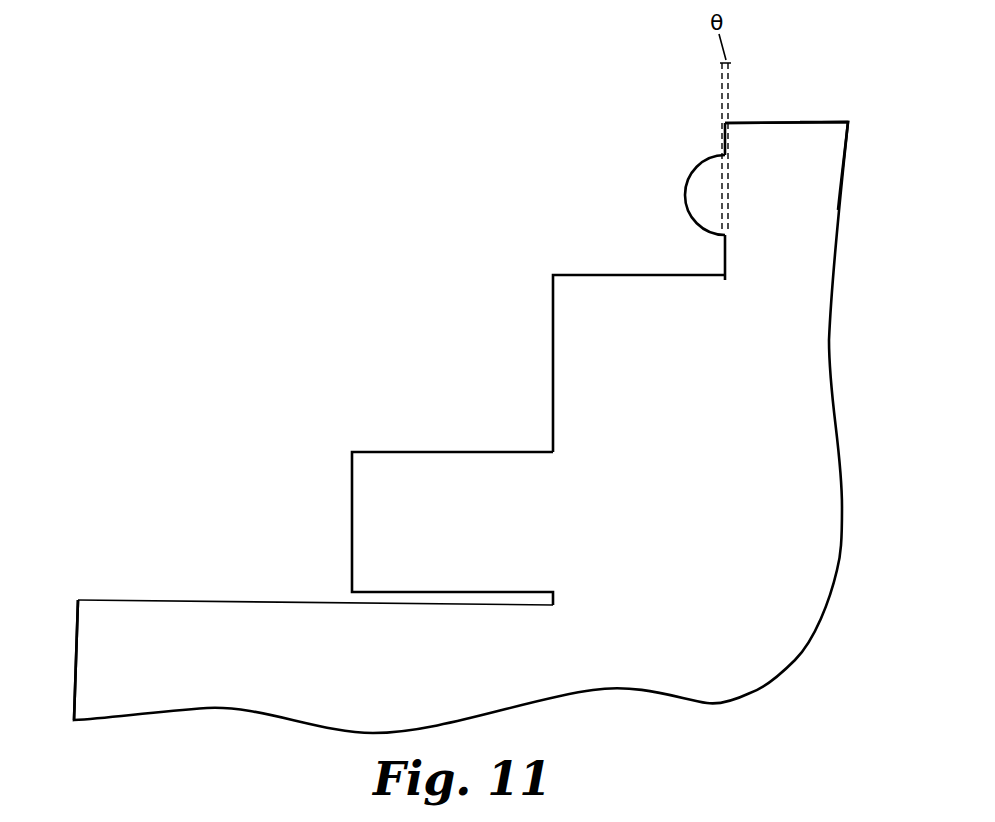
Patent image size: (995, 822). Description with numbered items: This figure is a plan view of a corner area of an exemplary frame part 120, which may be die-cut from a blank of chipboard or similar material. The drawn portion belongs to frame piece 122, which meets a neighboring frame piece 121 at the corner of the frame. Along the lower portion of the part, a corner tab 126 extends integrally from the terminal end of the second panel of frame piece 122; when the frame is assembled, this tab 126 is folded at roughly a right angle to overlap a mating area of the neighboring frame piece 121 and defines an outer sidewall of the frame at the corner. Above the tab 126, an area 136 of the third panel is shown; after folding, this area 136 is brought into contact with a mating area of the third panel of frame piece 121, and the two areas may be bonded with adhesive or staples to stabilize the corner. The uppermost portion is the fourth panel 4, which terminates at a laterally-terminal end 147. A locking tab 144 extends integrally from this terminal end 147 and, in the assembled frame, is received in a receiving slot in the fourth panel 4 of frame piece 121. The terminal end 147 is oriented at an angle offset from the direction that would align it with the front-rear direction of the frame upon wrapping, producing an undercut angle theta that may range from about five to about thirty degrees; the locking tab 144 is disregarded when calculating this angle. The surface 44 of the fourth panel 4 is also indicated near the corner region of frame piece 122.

The fourth panel 4 is at (813, 208).
The top surface 44 is at (770, 122).
The frame part 120 is at (482, 419).
The frame piece 121 is at (55, 594).
The frame piece 122 is at (845, 103).
The corner tab 126 is at (370, 528).
The area of third panel 136 is at (568, 376).
The locking tab 144 is at (698, 187).
The laterally-terminal end 147 is at (723, 138).